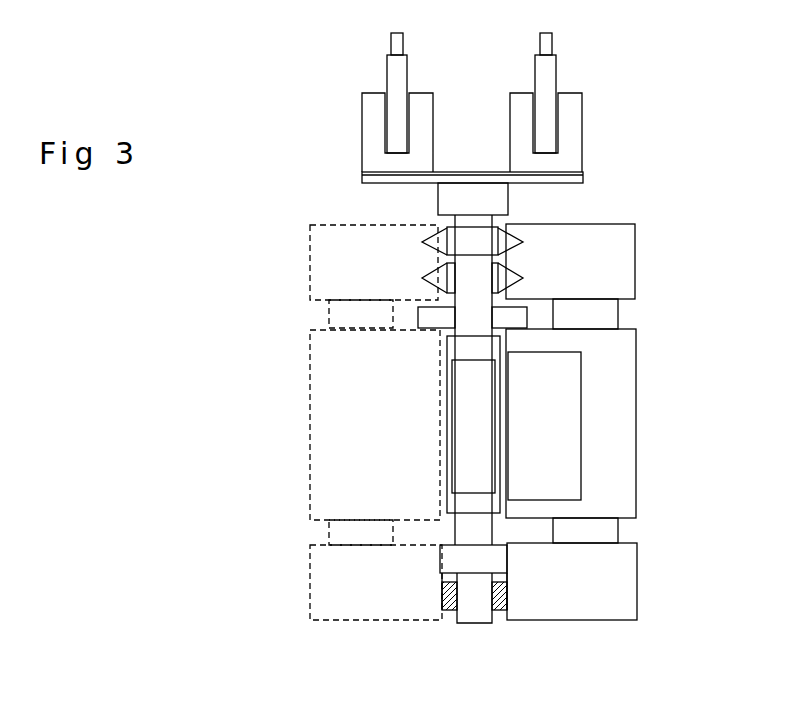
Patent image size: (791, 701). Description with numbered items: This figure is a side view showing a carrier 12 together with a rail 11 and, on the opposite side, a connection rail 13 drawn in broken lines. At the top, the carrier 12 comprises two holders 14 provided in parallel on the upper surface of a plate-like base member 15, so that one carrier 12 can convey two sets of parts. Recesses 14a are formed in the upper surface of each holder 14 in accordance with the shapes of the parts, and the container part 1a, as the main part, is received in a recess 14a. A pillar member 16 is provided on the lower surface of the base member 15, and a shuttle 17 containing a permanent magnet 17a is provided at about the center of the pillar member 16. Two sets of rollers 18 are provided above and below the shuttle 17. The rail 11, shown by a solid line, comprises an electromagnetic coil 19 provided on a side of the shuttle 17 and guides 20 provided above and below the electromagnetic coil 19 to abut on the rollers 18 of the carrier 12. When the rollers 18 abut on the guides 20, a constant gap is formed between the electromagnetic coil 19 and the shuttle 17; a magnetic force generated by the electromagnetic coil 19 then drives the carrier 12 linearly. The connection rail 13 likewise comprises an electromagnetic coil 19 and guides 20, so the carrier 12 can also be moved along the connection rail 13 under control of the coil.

The container part 1a is at (408, 68).
The rail 11 is at (638, 266).
The carrier 12 is at (586, 132).
The connection rail 13 is at (309, 265).
The holder 14 is at (583, 153).
The recess 14a is at (399, 124).
The base member 15 is at (583, 183).
The pillar member 16 is at (497, 202).
The shuttle 17 is at (500, 435).
The permanent magnet 17a is at (495, 400).
The roller 18 is at (515, 252).
The electromagnetic coil 19 is at (309, 422).
The guide 20 is at (309, 283).